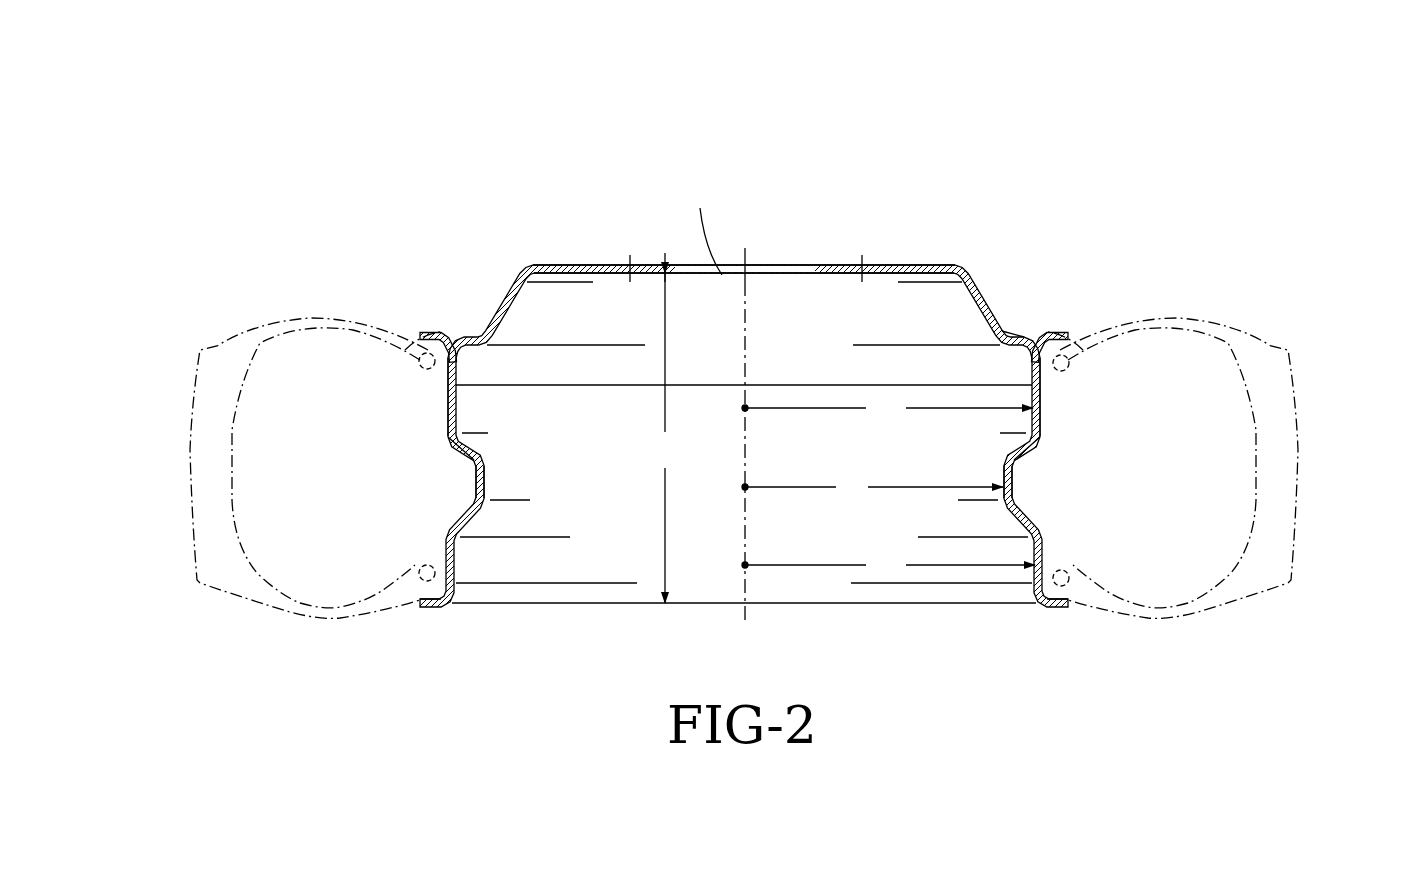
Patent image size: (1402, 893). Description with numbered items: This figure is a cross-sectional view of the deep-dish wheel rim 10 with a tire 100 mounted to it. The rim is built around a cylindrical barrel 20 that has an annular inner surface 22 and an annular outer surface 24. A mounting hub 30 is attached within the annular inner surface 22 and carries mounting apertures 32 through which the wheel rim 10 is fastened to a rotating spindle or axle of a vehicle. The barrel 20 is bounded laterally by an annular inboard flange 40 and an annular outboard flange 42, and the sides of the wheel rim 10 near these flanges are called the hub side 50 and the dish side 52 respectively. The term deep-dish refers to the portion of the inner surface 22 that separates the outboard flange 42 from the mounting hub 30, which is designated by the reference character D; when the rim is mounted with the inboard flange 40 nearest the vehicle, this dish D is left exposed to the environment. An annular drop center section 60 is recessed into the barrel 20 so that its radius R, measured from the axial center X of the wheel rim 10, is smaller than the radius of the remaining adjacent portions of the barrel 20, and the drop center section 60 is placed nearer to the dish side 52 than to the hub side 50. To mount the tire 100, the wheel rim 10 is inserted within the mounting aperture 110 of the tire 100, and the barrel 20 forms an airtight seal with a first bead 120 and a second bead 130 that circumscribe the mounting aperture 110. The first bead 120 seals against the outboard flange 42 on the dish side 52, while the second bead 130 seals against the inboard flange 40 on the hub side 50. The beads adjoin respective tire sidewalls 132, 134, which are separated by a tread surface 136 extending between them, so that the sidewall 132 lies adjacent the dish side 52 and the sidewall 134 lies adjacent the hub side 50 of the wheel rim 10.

The deep-dish wheel rim 10 is at (783, 183).
The barrel 20 is at (450, 395).
The annular inner surface 22 is at (482, 467).
The annular outer surface 24 is at (450, 428).
The mounting hub 30 is at (1000, 320).
The mounting apertures 32 is at (630, 268).
The annular inboard flange 40 is at (433, 348).
The annular outboard flange 42 is at (447, 606).
The hub side 50 is at (1032, 336).
The dish side 52 is at (970, 607).
The annular drop center section 60 is at (480, 487).
The tire 100 is at (216, 348).
The mounting aperture 110 is at (428, 352).
The first bead 120 is at (420, 565).
The second bead 130 is at (420, 365).
The tire sidewall 132 is at (287, 612).
The tire sidewall 134 is at (290, 318).
The tread surface 136 is at (185, 462).
The dish portion D is at (665, 428).
The radius of drop center section R is at (888, 486).
The axial center X is at (719, 399).